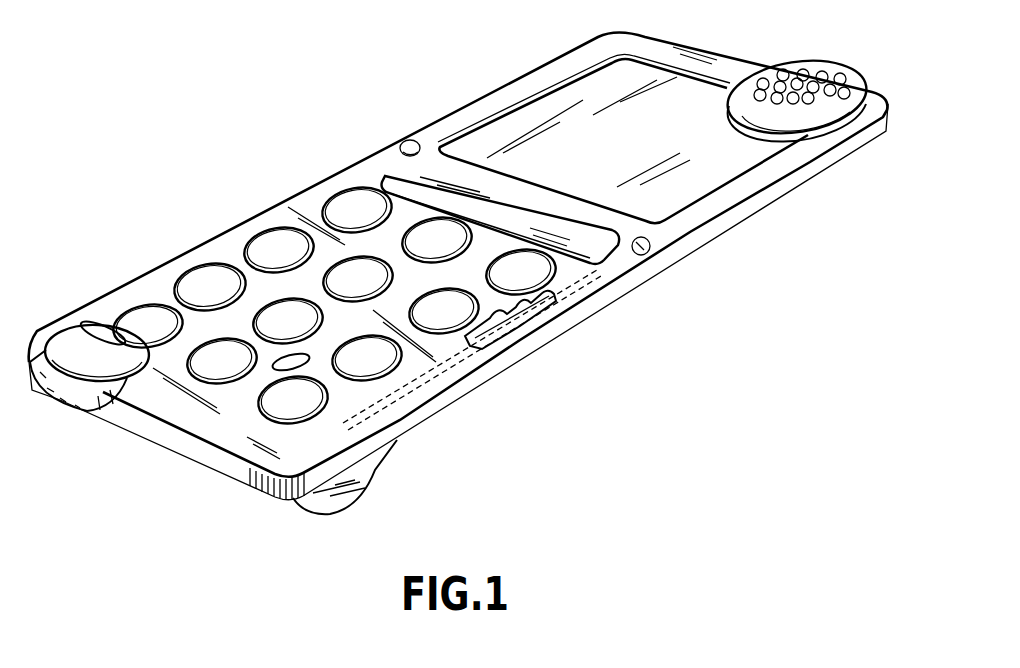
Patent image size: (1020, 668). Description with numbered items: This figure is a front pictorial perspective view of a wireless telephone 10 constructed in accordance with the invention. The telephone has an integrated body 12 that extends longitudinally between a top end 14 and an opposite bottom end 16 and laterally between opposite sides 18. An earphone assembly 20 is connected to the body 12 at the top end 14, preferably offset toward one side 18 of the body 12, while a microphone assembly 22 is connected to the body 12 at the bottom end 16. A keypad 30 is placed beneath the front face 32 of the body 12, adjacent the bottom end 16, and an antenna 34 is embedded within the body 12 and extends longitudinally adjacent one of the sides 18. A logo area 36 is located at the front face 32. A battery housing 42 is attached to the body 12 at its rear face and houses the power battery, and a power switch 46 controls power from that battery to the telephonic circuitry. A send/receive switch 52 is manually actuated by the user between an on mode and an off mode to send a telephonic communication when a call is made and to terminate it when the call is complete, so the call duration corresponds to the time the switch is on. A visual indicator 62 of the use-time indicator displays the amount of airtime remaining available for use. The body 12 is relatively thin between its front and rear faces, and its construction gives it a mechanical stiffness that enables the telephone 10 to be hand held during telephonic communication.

The wireless telephone 10 is at (238, 221).
The integrated body 12 is at (296, 196).
The top end 14 is at (680, 46).
The bottom end 16 is at (125, 413).
The sides 18 is at (433, 136).
The earphone assembly 20 is at (832, 63).
The microphone assembly 22 is at (77, 345).
The keypad 30 is at (250, 368).
The front face 32 is at (195, 412).
The antenna 34 is at (520, 320).
The logo area 36 is at (662, 192).
The battery housing 42 is at (328, 500).
The power switch 46 is at (400, 146).
The send/receive switch 52 is at (646, 252).
The visual indicator 62 is at (513, 222).